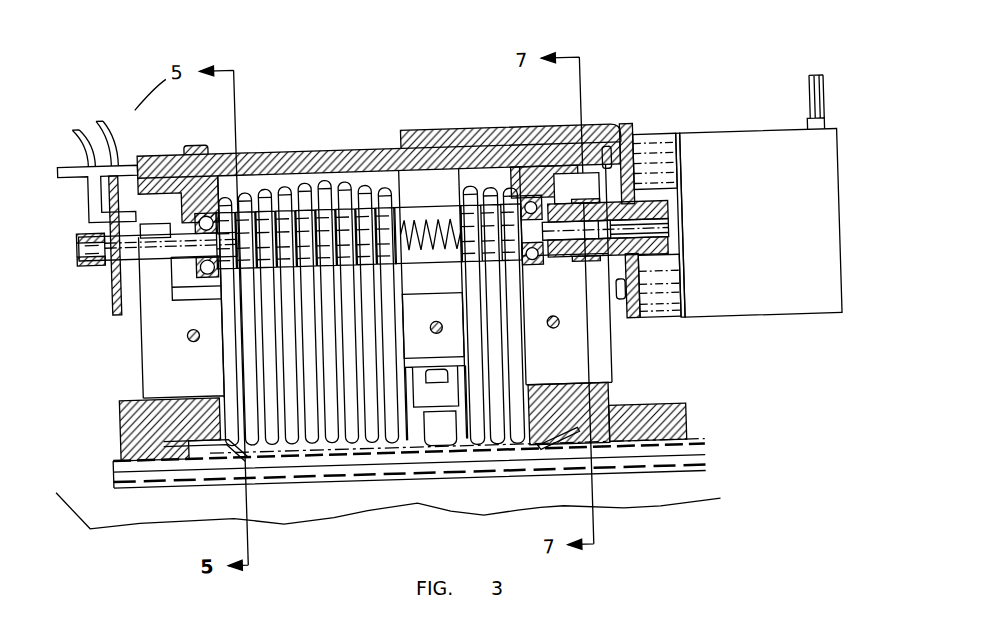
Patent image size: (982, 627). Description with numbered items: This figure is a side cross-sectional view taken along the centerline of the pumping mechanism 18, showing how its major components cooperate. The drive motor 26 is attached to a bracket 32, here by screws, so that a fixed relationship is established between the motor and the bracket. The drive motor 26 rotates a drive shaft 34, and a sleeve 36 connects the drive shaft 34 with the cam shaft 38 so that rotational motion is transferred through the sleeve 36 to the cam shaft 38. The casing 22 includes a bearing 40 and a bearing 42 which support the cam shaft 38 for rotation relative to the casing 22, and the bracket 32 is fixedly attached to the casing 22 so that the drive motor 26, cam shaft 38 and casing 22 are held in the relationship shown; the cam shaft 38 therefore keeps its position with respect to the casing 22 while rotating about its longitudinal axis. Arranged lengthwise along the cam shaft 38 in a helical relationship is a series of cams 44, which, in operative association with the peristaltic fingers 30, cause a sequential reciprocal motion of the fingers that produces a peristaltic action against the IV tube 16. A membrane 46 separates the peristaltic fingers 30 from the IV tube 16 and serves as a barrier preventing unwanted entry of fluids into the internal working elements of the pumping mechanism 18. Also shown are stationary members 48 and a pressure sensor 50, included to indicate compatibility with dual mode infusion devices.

The IV tube 16 is at (115, 467).
The pumping mechanism 18 is at (661, 78).
The casing 22 is at (292, 160).
The drive motor 26 is at (740, 180).
The peristaltic fingers 30 is at (236, 436).
The bracket 32 is at (634, 324).
The drive shaft 34 is at (675, 241).
The sleeve 36 is at (661, 258).
The cam shaft 38 is at (100, 255).
The bearing 40 is at (534, 198).
The bearing 42 is at (199, 199).
The cams 44 is at (345, 180).
The membrane 46 is at (562, 445).
The stationary members 48 is at (412, 426).
The pressure sensor 50 is at (438, 426).